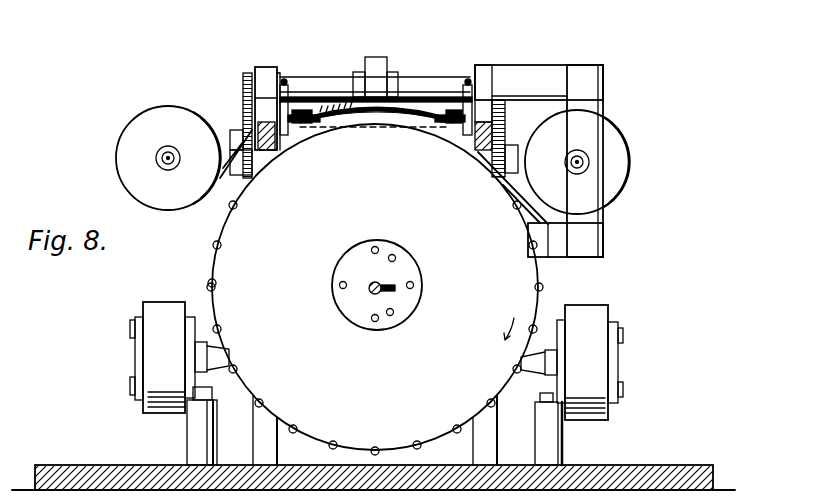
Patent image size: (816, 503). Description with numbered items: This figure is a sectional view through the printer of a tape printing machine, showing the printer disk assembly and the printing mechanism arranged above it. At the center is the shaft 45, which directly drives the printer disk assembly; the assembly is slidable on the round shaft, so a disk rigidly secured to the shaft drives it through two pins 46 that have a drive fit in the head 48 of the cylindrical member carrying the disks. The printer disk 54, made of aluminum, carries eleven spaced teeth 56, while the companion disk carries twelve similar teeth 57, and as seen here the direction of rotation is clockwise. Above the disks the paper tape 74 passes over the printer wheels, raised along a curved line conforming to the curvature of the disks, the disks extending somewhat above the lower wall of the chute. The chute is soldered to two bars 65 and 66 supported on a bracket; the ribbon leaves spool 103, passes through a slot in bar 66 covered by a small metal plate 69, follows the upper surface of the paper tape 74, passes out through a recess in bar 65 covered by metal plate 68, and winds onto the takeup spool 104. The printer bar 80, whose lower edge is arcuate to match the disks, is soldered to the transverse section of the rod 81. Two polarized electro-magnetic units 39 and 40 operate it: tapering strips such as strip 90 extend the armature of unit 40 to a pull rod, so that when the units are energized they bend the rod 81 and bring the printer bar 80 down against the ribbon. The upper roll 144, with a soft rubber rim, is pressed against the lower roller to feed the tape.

The polarized electro-magnetic unit 39 is at (602, 361).
The polarized electro-magnetic unit 40 is at (148, 348).
The shaft 45 is at (372, 283).
The pins 46 is at (378, 247).
The head 48 is at (360, 314).
The printer disk 54 is at (223, 243).
The teeth 56 is at (226, 217).
The teeth 57 is at (210, 281).
The bar 65 is at (300, 118).
The bar 66 is at (460, 120).
The metal plate 68 is at (300, 108).
The metal plate 69 is at (448, 108).
The paper tape 74 is at (420, 128).
The printer bar 80 is at (405, 112).
The rod 81 is at (414, 93).
The tapering metal strip 90 is at (215, 346).
The spool 103 is at (618, 143).
The spool 104 is at (168, 112).
The upper roll 144 is at (375, 57).